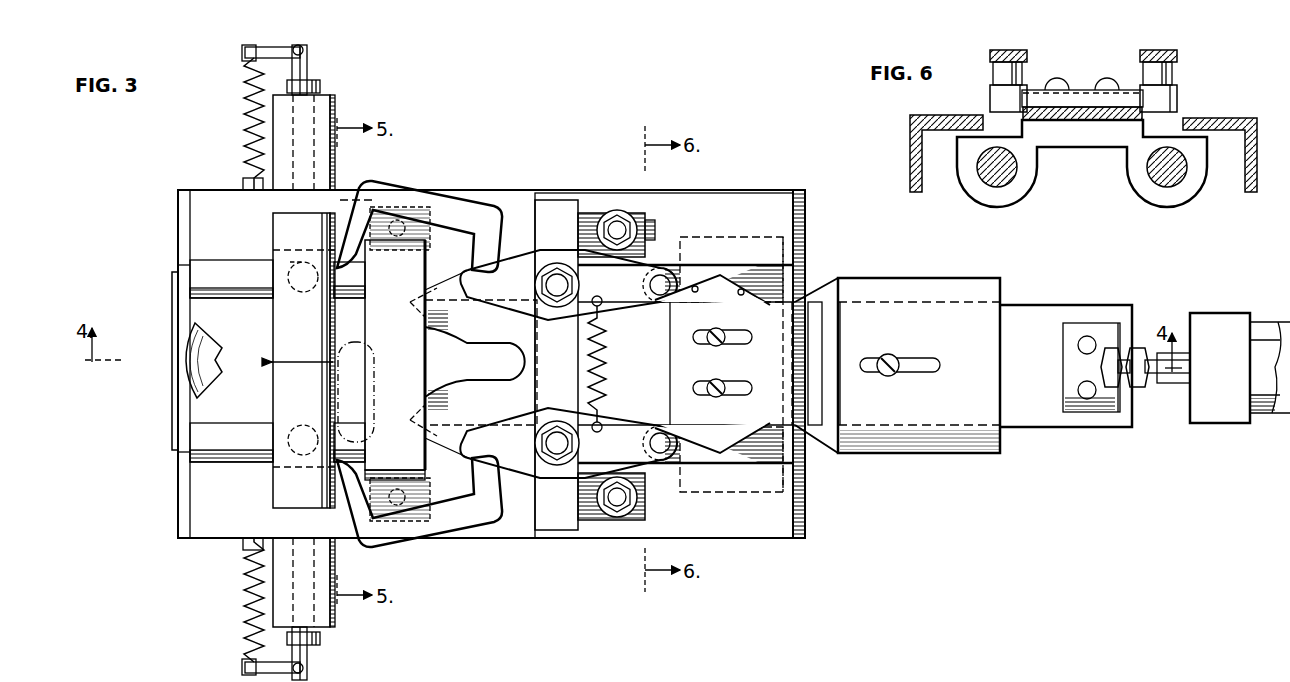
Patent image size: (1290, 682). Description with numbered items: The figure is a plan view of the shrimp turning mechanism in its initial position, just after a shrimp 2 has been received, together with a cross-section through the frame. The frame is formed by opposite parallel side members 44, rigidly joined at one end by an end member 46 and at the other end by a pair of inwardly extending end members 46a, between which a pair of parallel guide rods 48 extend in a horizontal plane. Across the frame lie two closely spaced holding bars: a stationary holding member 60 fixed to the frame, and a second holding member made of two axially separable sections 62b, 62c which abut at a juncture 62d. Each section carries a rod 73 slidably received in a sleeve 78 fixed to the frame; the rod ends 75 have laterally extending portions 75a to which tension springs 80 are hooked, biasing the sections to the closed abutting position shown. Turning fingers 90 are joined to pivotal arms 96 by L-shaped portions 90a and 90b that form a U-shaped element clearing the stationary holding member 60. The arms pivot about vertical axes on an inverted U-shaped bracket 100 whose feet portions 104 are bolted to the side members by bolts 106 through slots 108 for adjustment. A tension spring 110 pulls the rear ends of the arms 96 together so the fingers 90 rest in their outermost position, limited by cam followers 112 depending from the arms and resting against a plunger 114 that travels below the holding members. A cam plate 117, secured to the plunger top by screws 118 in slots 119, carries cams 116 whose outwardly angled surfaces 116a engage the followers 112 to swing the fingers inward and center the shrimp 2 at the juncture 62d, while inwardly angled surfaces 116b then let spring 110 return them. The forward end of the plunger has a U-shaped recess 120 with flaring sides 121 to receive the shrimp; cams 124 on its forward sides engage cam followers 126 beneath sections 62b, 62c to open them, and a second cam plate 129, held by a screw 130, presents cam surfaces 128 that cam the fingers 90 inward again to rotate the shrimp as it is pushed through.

In FIG. 3, the shrimp 2 is at (372, 681).
In FIG. 3, the side members 44 is at (724, 204).
In FIG. 6, the side members 44 is at (910, 152).
In FIG. 3, the end member 46 is at (798, 230).
In FIG. 3, the end members 46a is at (178, 236).
In FIG. 6, the guide rods 48 is at (1152, 168).
In FIG. 3, the stationary holding member 60 is at (395, 360).
In FIG. 3, the separable section 62b is at (301, 435).
In FIG. 3, the separable section 62c is at (304, 360).
In FIG. 3, the juncture 62d is at (300, 392).
In FIG. 3, the rods 73 is at (312, 64).
In FIG. 3, the end portions 75 is at (297, 44).
In FIG. 3, the laterally extending portions 75a is at (279, 47).
In FIG. 3, the sleeves 78 is at (334, 110).
In FIG. 3, the tension springs 80 is at (243, 126).
In FIG. 3, the turning fingers 90 is at (356, 214).
In FIG. 3, the L-shaped portion 90a is at (468, 217).
In FIG. 3, the L-shaped portion 90b is at (500, 512).
In FIG. 3, the arms 96 is at (518, 283).
In FIG. 3, the bracket 100 is at (557, 440).
In FIG. 3, the feet portions 104 is at (587, 208).
In FIG. 3, the bolts 106 is at (617, 220).
In FIG. 3, the slots 108 is at (645, 228).
In FIG. 3, the tension spring 110 is at (607, 334).
In FIG. 3, the cam followers 112 is at (666, 274).
In FIG. 3, the plunger 114 is at (1045, 283).
In FIG. 3, the cams 116 is at (723, 288).
In FIG. 3, the cam surfaces 116a is at (695, 286).
In FIG. 3, the cam surfaces 116b is at (742, 289).
In FIG. 3, the cam plate 117 is at (731, 364).
In FIG. 3, the screws 118 is at (711, 330).
In FIG. 3, the slots 119 is at (735, 332).
In FIG. 3, the recess 120 is at (475, 362).
In FIG. 3, the flared sides 121 is at (440, 343).
In FIG. 3, the cams 124 is at (440, 270).
In FIG. 3, the cam followers 126 is at (290, 262).
In FIG. 3, the cam surfaces 128 is at (812, 293).
In FIG. 3, the cam plate 129 is at (902, 282).
In FIG. 3, the screw 130 is at (180, 342).